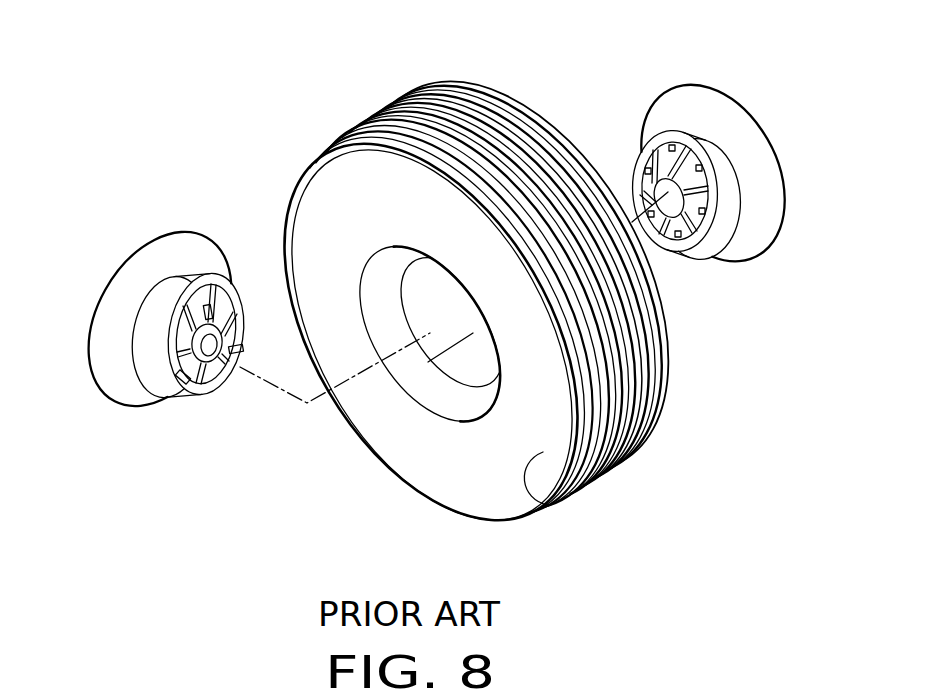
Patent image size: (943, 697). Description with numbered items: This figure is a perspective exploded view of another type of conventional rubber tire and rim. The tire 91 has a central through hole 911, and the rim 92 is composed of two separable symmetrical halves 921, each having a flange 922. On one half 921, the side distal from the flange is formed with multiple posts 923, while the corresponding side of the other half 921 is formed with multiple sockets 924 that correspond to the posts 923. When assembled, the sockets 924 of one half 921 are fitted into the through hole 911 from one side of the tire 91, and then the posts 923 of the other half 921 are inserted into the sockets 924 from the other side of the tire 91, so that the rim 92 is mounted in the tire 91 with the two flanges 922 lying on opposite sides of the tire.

The tire 91 is at (597, 490).
The through hole 911 is at (447, 375).
The rim 92 is at (452, 243).
The half 921 is at (155, 335).
The flange 922 is at (168, 226).
The post 923 is at (181, 383).
The socket 924 is at (633, 215).